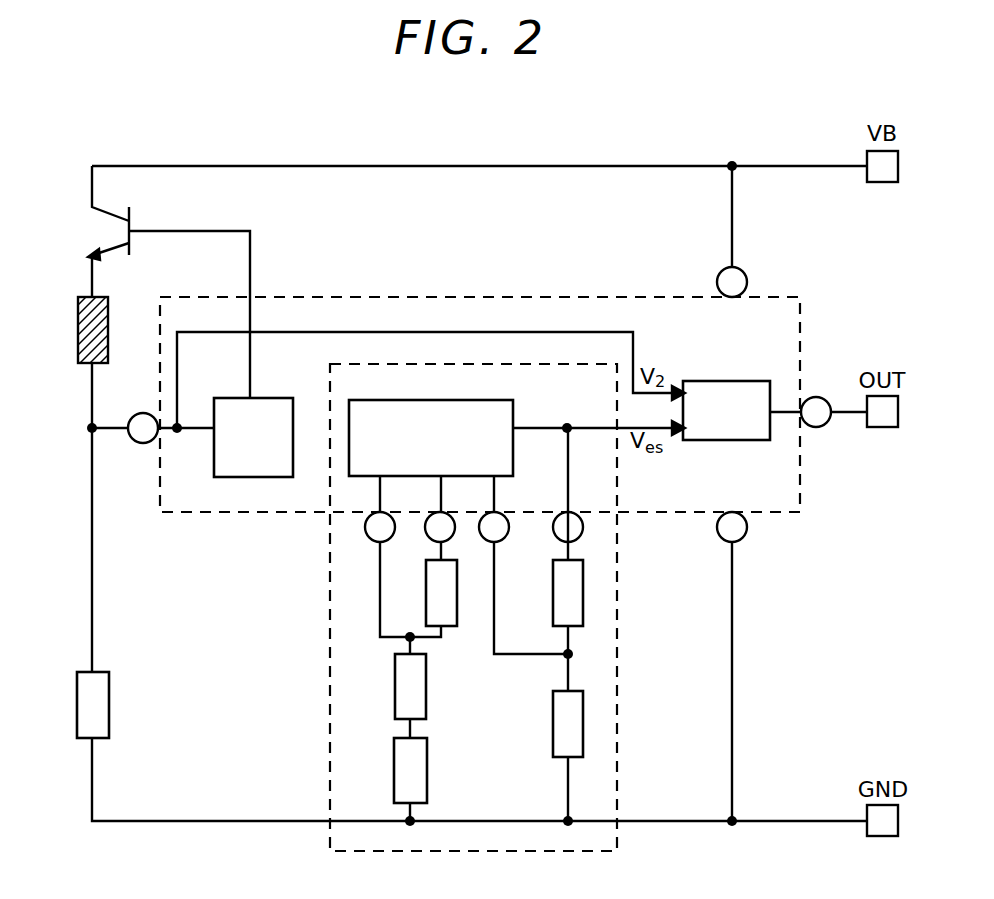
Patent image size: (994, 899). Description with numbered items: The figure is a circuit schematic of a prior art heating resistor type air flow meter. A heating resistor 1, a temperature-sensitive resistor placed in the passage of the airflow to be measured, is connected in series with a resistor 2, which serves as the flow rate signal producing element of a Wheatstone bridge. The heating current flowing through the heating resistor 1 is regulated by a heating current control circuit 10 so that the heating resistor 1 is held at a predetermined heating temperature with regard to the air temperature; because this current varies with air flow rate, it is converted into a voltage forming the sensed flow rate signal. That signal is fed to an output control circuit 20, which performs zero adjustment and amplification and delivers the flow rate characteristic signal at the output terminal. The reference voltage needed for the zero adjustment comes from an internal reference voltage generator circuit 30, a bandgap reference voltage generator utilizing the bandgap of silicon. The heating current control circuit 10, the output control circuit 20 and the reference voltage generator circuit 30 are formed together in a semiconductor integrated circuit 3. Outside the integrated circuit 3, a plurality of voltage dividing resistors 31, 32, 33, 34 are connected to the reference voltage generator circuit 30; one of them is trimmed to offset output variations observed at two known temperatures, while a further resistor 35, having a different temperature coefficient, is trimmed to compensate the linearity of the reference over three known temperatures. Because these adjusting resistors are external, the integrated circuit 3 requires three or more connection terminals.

The heating resistor 1 is at (78, 320).
The resistor 2 is at (77, 700).
The semiconductor integrated circuit 3 is at (528, 297).
The heating current control circuit 10 is at (255, 397).
The output control circuit 20 is at (717, 380).
The internal reference voltage generator circuit 30 is at (500, 852).
The voltage dividing resistor 31 is at (428, 587).
The voltage dividing resistor 32 is at (398, 771).
The voltage dividing resistor 33 is at (583, 589).
The voltage dividing resistor 34 is at (583, 722).
The resistor 35 is at (400, 688).